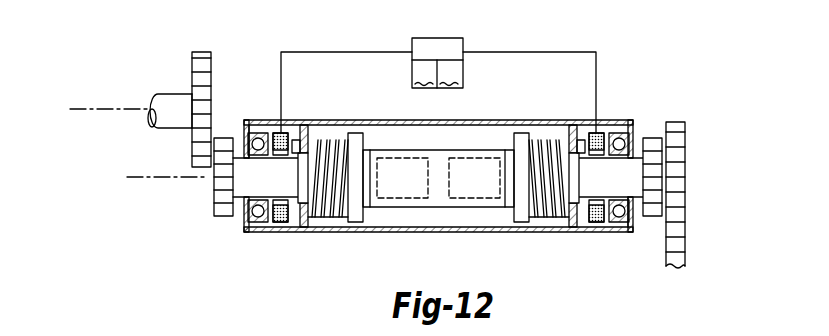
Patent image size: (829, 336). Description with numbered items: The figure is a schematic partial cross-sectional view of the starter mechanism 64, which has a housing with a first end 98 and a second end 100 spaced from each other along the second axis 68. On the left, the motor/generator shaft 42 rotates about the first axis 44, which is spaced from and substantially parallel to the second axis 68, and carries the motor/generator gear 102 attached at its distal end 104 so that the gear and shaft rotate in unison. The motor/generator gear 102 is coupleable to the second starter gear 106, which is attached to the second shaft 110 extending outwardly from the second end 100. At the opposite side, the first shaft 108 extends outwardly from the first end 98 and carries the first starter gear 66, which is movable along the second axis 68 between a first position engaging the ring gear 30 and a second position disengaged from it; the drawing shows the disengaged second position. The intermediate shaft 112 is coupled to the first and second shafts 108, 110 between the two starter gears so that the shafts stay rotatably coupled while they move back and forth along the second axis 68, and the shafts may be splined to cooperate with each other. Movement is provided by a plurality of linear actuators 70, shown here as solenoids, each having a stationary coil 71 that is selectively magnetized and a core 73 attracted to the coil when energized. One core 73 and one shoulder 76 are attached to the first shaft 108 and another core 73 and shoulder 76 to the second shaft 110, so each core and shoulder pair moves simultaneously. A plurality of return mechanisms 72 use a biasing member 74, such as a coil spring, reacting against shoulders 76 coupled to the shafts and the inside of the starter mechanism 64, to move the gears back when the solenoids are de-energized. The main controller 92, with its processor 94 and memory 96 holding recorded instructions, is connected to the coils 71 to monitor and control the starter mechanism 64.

The ring gear 30 is at (685, 156).
The motor/generator shaft 42 is at (168, 120).
The first axis 44 is at (88, 108).
The starter mechanism 64 is at (616, 120).
The first starter gear 66 is at (651, 137).
The second axis 68 is at (140, 180).
The linear actuator 70 is at (268, 224).
The coil 71 is at (282, 223).
The return mechanism 72 is at (329, 219).
The core 73 is at (298, 183).
The biasing member 74 is at (335, 143).
The shoulder 76 is at (296, 131).
The main controller 92 is at (440, 38).
The processor 94 is at (425, 73).
The memory 96 is at (450, 73).
The first end 98 is at (635, 231).
The second end 100 is at (242, 227).
The motor/generator gear 102 is at (212, 77).
The distal end 104 is at (168, 93).
The second starter gear 106 is at (223, 136).
The first shaft 108 is at (508, 187).
The second shaft 110 is at (367, 187).
The intermediate shaft 112 is at (433, 200).